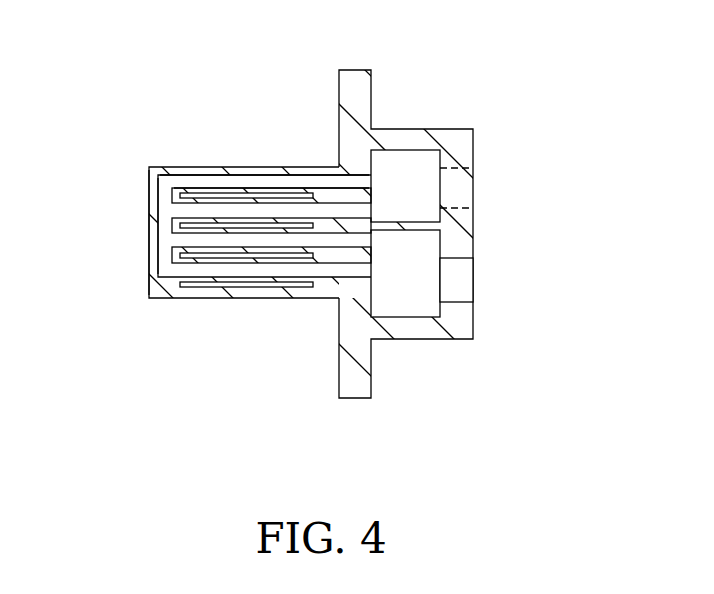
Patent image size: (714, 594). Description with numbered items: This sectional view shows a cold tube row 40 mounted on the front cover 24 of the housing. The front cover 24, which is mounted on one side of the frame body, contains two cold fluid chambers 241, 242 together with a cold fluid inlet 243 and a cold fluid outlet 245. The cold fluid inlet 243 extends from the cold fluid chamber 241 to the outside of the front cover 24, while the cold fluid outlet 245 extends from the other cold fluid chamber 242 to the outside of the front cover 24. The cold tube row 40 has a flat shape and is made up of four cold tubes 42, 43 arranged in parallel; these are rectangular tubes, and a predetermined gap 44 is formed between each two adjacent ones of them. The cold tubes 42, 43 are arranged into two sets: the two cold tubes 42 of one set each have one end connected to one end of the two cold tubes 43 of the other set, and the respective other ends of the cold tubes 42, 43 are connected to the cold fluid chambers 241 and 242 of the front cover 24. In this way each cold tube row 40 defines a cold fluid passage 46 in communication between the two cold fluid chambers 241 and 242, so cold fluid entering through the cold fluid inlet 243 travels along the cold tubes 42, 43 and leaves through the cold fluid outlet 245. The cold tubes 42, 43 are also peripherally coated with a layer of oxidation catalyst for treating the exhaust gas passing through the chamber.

The front cover 24 is at (478, 103).
The cold fluid chamber 241 is at (410, 165).
The cold fluid chamber 242 is at (412, 308).
The cold fluid inlet 243 is at (457, 204).
The cold fluid outlet 245 is at (458, 298).
The cold tube row 40 is at (175, 140).
The cold tubes 42 is at (215, 195).
The cold tubes 43 is at (232, 258).
The gap 44 is at (200, 230).
The cold fluid passage 46 is at (312, 178).